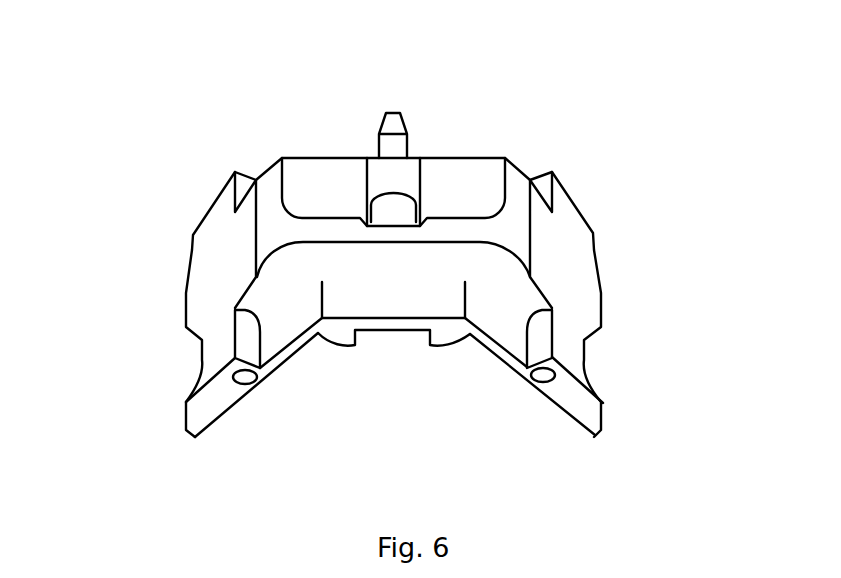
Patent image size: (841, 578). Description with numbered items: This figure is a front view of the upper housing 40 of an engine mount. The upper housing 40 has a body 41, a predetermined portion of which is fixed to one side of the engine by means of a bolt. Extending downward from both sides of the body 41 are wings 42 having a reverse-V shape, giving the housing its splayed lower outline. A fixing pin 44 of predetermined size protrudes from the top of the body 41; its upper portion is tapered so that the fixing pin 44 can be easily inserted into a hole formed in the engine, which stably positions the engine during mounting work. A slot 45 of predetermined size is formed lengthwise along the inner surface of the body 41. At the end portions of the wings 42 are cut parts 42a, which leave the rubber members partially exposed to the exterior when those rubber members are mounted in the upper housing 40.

The upper housing 40 is at (188, 130).
The body 41 is at (318, 172).
The wings 42 is at (202, 300).
The cut parts 42a is at (200, 358).
The fixing pin 44 is at (393, 123).
The slot 45 is at (390, 337).